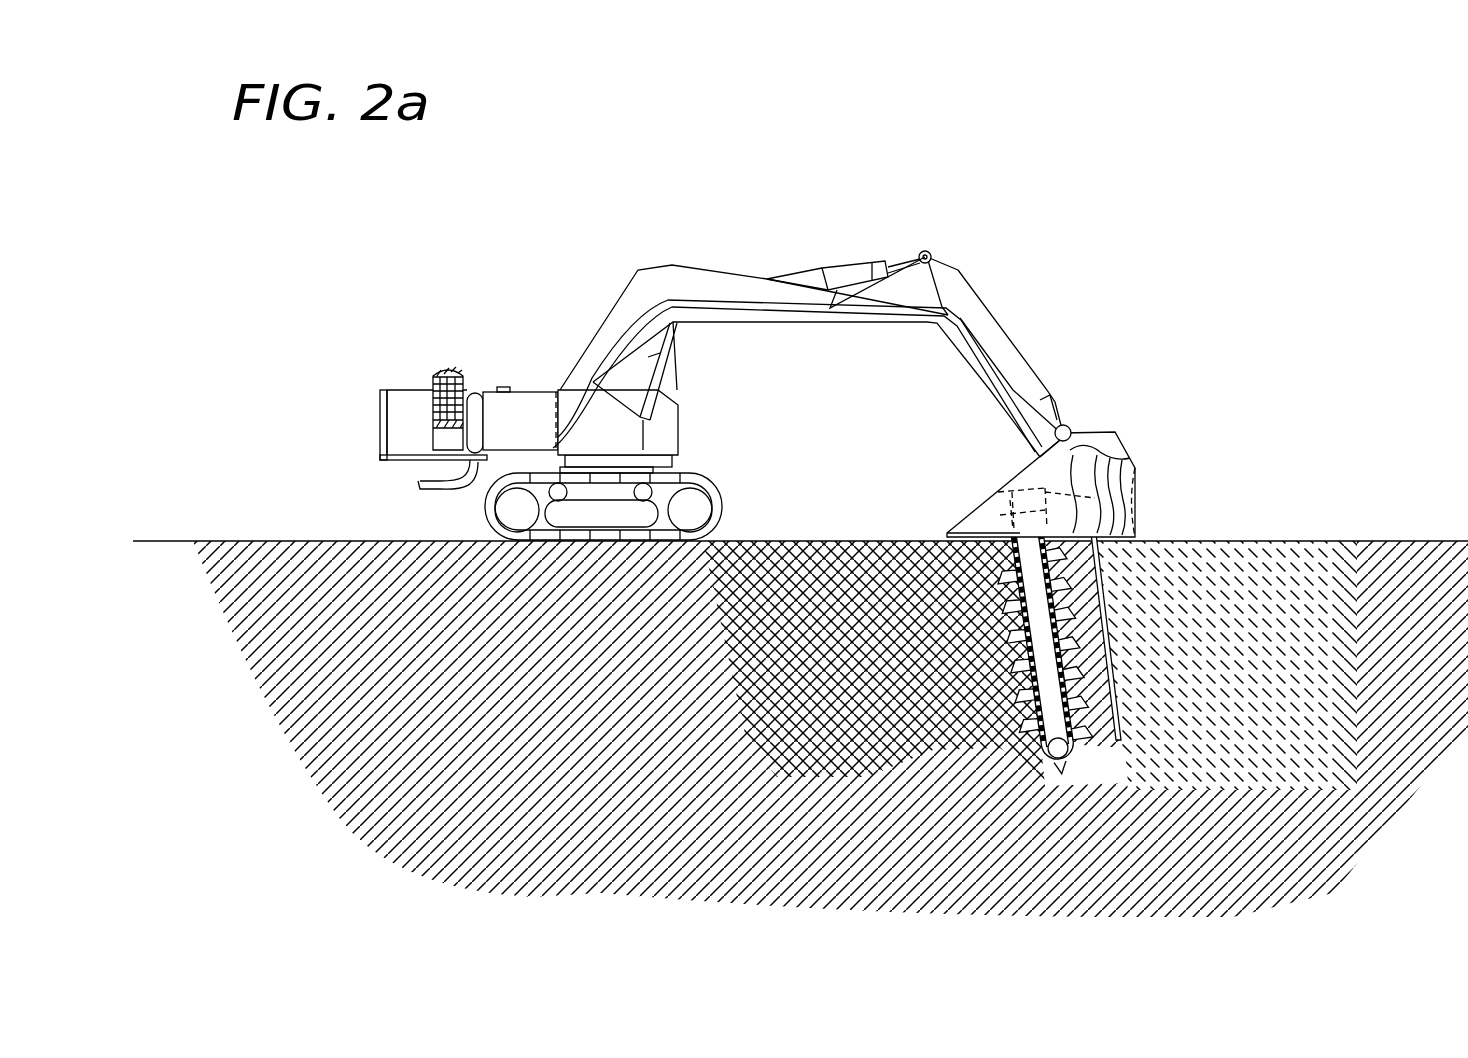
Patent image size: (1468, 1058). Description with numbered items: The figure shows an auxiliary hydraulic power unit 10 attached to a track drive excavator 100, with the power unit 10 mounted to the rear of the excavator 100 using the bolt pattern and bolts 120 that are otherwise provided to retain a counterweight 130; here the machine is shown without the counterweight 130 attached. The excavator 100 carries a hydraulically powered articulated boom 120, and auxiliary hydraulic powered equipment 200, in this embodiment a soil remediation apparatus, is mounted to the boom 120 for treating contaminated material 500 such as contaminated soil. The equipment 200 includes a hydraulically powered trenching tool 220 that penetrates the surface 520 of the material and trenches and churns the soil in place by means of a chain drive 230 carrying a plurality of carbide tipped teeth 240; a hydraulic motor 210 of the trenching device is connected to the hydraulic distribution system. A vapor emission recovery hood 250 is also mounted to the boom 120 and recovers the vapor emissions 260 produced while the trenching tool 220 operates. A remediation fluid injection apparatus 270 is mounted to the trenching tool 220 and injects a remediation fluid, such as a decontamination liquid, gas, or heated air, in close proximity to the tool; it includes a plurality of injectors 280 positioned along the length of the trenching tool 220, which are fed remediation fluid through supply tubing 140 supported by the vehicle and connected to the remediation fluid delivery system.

The auxiliary hydraulic power unit 10 is at (421, 378).
The track drive excavator 100 is at (692, 421).
The articulated boom 120 is at (698, 283).
The counterweight 130 is at (470, 390).
The supply tubing 140 is at (837, 290).
The auxiliary hydraulic powered equipment 200 is at (1100, 413).
The hydraulic motor 210 is at (1020, 527).
The trenching tool 220 is at (1137, 480).
The chain drive 230 is at (1010, 500).
The carbide tipped teeth 240 is at (1020, 545).
The vapor emission recovery hood 250 is at (1137, 510).
The vapor emissions 260 is at (1105, 448).
The remediation fluid injection apparatus 270 is at (1111, 670).
The injectors 280 is at (1108, 695).
The contaminated material 500 is at (1267, 600).
The surface 520 is at (1325, 540).